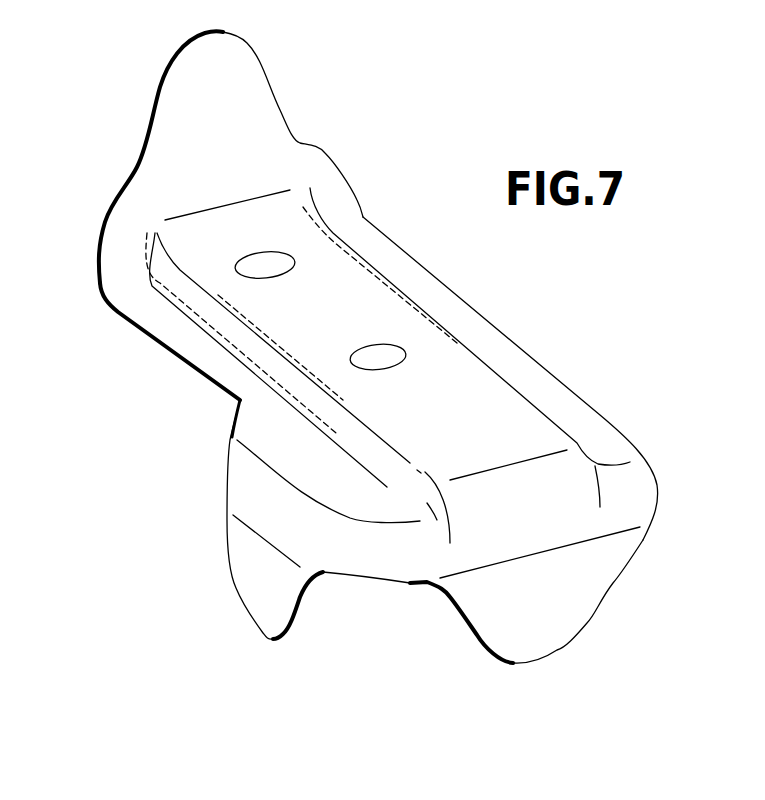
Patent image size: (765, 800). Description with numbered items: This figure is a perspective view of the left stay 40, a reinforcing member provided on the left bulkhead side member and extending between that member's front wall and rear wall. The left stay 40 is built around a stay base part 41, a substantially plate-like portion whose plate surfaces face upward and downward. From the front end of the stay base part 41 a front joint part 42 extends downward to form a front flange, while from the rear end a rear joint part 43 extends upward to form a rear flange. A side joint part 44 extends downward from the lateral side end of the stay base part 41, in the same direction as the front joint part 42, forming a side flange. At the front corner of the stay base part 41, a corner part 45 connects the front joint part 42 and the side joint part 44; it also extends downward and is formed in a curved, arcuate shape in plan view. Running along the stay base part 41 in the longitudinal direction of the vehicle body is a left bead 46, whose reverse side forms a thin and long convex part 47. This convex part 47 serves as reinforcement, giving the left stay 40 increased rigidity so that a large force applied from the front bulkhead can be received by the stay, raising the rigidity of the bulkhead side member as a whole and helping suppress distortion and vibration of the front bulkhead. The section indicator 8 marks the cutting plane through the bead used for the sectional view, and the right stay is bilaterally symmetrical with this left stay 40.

The left stay 40 is at (346, 137).
The stay base part 41 is at (168, 320).
The front joint part 42 is at (508, 630).
The rear joint part 43 is at (170, 132).
The side joint part 44 is at (253, 588).
The corner part 45 is at (382, 556).
The left bead 46 is at (280, 392).
The convex part 47 is at (277, 330).
The section line 8- 8 is at (122, 462).